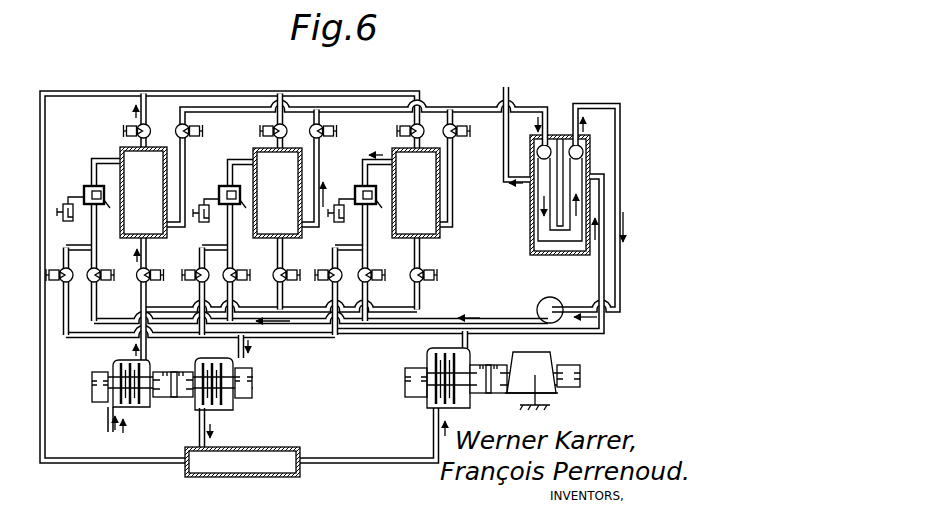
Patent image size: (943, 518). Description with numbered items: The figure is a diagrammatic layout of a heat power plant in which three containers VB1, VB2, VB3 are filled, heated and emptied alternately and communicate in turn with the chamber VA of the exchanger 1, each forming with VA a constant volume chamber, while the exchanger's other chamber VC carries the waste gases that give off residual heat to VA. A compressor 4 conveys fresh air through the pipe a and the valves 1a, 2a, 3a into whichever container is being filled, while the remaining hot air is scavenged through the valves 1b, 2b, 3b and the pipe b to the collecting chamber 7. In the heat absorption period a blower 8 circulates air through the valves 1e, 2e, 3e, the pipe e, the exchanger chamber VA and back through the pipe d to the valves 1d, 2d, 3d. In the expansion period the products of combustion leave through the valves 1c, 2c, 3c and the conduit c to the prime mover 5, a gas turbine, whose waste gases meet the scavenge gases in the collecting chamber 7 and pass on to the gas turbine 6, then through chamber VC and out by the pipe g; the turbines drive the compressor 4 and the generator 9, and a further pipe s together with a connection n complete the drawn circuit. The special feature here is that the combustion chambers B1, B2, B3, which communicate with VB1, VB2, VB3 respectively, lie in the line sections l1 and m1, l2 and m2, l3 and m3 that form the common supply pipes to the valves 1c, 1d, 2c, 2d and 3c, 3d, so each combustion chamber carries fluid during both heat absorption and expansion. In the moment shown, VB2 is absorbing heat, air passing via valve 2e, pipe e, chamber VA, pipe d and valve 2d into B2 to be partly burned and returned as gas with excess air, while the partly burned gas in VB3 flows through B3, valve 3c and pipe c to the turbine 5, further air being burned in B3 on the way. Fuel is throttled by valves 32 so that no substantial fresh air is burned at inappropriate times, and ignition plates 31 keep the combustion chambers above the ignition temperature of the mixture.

The exchanger 1 is at (539, 195).
The compressor 4 is at (124, 376).
The prime mover 5 is at (207, 376).
The gas turbine 6 is at (436, 352).
The collecting chamber 7 is at (242, 462).
The blower 8 is at (545, 300).
The generator 9 is at (550, 354).
The ignition plates 31 is at (235, 185).
The valves 32 is at (30, 283).
The valve 1a is at (153, 284).
The valve 1b is at (126, 132).
The valve 1c is at (59, 284).
The valve 1d is at (103, 284).
The valve 1e is at (199, 132).
The valve 2a is at (288, 284).
The valve 2b is at (265, 132).
The valve 2c is at (195, 284).
The valve 2d is at (239, 284).
The valve 2e is at (333, 132).
The valve 3a is at (428, 284).
The valve 3b is at (403, 132).
The valve 3c is at (327, 284).
The valve 3d is at (374, 284).
The valve 3e is at (466, 132).
The pipe a is at (141, 310).
The pipe b is at (102, 86).
The conduit c is at (328, 347).
The pipe d is at (460, 317).
The pipe e is at (457, 102).
The pipe g is at (498, 124).
The pipe s is at (377, 465).
The control line n is at (70, 189).
The line section m1 is at (83, 206).
The line section m2 is at (201, 205).
The line section m3 is at (352, 208).
The line section l1 is at (102, 262).
The line section l2 is at (238, 262).
The line section l3 is at (372, 262).
The combustion chamber B1 is at (110, 211).
The combustion chamber B2 is at (241, 212).
The combustion chamber B3 is at (376, 212).
The exchanger chamber VA is at (541, 231).
The exchanger chamber VC is at (531, 249).
The container VB1 is at (143, 192).
The container VB2 is at (277, 193).
The container VB3 is at (416, 193).